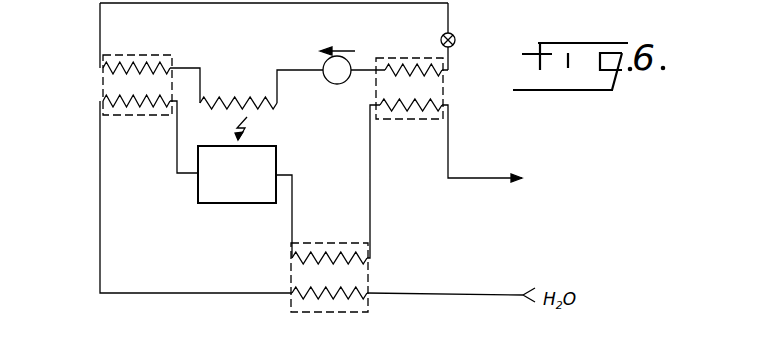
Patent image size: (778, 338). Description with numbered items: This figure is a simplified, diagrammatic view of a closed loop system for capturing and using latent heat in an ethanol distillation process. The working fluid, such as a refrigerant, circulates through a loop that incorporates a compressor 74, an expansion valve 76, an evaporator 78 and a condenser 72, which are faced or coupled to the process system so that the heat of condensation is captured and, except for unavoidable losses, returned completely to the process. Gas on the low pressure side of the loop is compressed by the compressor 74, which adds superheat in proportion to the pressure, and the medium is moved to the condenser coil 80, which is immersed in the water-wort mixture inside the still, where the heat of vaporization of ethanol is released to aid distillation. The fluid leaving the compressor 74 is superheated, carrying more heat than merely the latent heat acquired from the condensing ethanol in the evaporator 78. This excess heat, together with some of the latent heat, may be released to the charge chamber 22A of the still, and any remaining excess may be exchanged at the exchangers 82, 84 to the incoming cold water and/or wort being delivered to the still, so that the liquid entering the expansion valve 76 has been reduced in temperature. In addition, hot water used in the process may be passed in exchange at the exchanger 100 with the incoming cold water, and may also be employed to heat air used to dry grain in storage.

The charge chamber 22A is at (250, 205).
The condenser 72 is at (404, 108).
The compressor 74 is at (328, 86).
The expansion valve 76 is at (454, 34).
The evaporator 78 is at (421, 64).
The condenser coil 80 is at (254, 96).
The heat exchanger 82 is at (100, 77).
The heat exchanger 84 is at (136, 101).
The heat exchange 100 is at (368, 272).